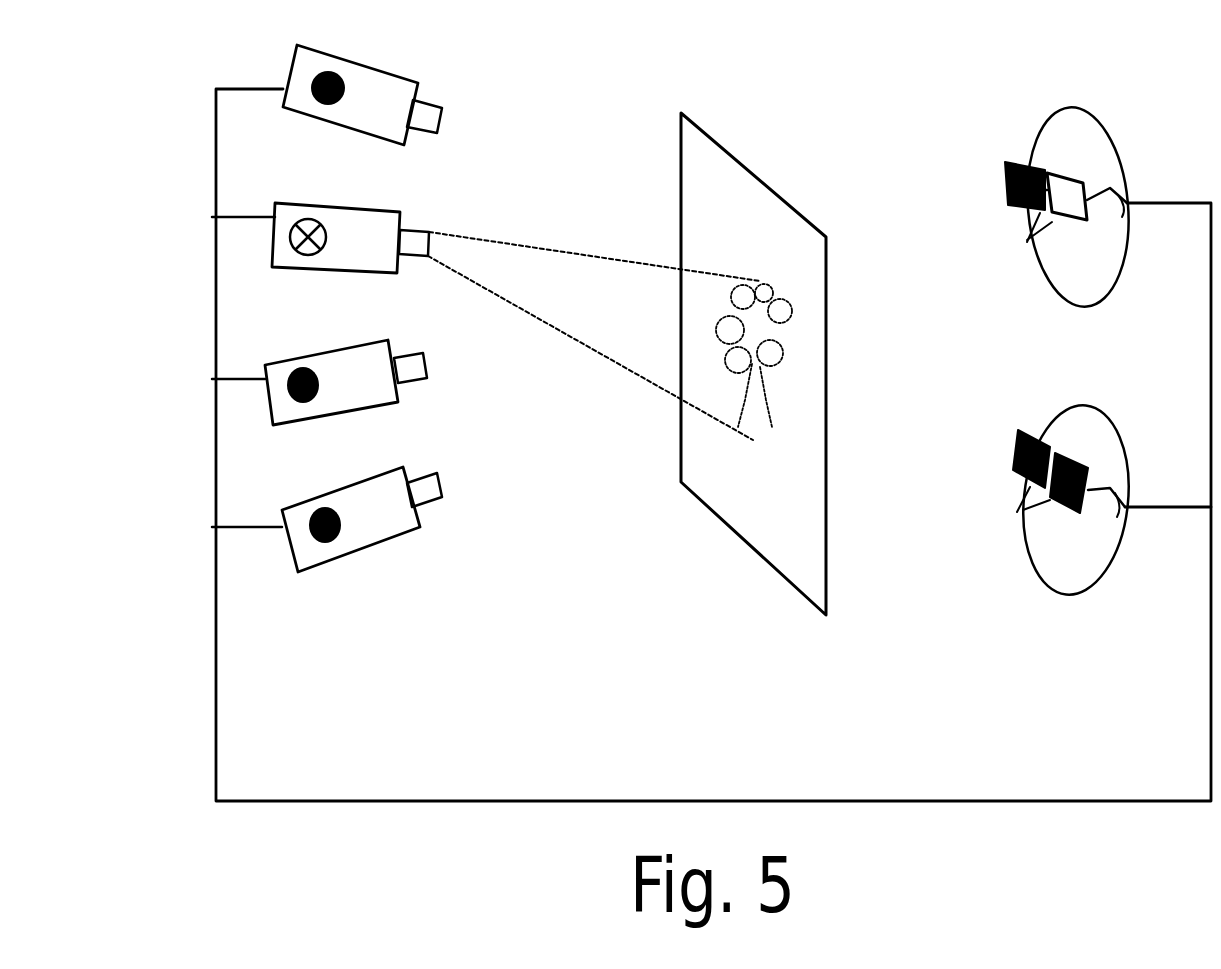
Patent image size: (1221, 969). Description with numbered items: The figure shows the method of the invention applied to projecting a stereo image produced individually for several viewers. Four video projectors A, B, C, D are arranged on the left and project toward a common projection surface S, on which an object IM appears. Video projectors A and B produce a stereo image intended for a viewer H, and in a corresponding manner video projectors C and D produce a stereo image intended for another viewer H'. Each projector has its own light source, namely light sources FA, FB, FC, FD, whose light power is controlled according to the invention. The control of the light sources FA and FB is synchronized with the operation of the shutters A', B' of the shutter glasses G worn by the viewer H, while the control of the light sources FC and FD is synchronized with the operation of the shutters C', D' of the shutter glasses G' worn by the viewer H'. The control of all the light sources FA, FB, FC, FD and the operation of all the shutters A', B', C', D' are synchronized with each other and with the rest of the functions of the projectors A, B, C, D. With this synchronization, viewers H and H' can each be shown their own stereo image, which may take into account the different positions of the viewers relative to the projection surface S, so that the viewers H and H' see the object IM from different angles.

The video projector A is at (362, 95).
The video projector B is at (350, 238).
The video projector C is at (346, 382).
The video projector D is at (362, 519).
The light source FA is at (311, 83).
The light source FB is at (300, 218).
The light source FC is at (295, 368).
The light source FD is at (310, 503).
The projection surface S is at (753, 364).
The object IM is at (754, 355).
The shutter A' is at (1042, 132).
The shutter B' is at (1095, 137).
The shutter glasses G is at (1109, 173).
The viewer H is at (1071, 228).
The shutter C' is at (1069, 416).
The shutter D' is at (1115, 451).
The shutter glasses G' is at (1108, 476).
The viewer H' is at (1064, 522).